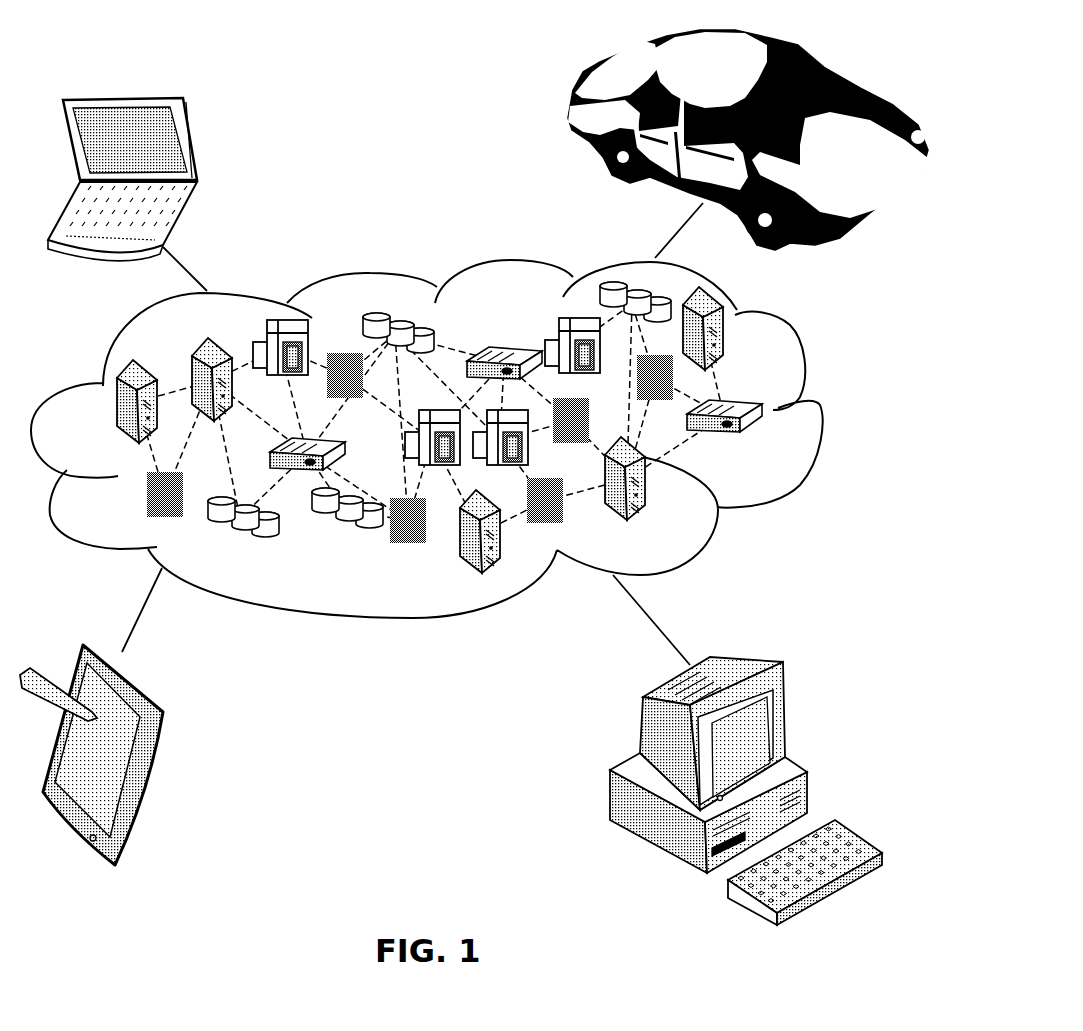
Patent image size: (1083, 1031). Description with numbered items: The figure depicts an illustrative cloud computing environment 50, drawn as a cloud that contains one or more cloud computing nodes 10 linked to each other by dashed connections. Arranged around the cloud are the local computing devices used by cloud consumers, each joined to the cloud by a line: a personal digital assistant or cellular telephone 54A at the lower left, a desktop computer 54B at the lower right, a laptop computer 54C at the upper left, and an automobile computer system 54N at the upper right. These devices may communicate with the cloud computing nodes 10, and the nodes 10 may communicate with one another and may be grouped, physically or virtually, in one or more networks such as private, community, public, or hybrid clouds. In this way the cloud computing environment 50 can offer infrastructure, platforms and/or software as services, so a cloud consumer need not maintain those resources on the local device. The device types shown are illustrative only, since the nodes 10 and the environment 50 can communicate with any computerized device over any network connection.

The cloud computing environment 50 is at (820, 413).
The cloud computing nodes 10 is at (778, 446).
The personal digital assistant (PDA) or cellular telephone 54A is at (157, 743).
The desktop computer 54B is at (753, 655).
The laptop computer 54C is at (193, 147).
The automobile computer system 54N is at (570, 113).